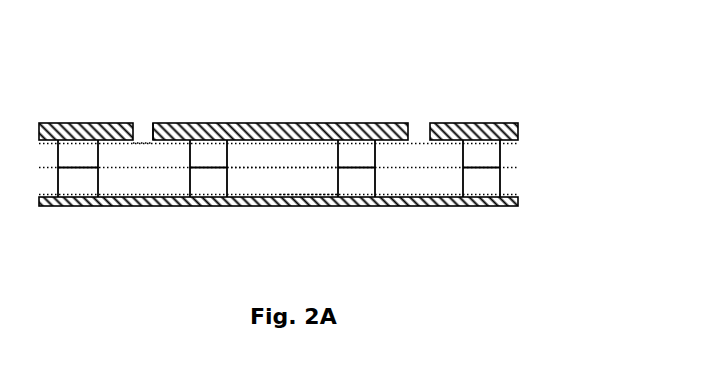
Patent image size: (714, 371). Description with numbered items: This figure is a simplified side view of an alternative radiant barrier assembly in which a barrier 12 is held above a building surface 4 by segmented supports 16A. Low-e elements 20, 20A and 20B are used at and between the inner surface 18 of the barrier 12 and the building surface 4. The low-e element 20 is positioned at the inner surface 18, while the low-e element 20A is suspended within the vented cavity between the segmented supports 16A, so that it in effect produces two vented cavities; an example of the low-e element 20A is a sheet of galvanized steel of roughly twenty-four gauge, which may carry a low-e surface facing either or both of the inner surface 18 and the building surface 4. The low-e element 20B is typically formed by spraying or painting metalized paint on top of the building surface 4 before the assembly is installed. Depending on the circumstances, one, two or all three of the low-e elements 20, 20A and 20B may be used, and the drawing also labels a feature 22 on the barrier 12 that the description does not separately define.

The building surface 4 is at (507, 196).
The barrier 12 is at (357, 123).
The segmented supports 16A is at (490, 153).
The inner surface 18 is at (168, 141).
The low-e element 20 is at (268, 145).
The low-e element 20A is at (260, 166).
The low-e element 20B is at (288, 196).
The plate edge 22 is at (188, 127).